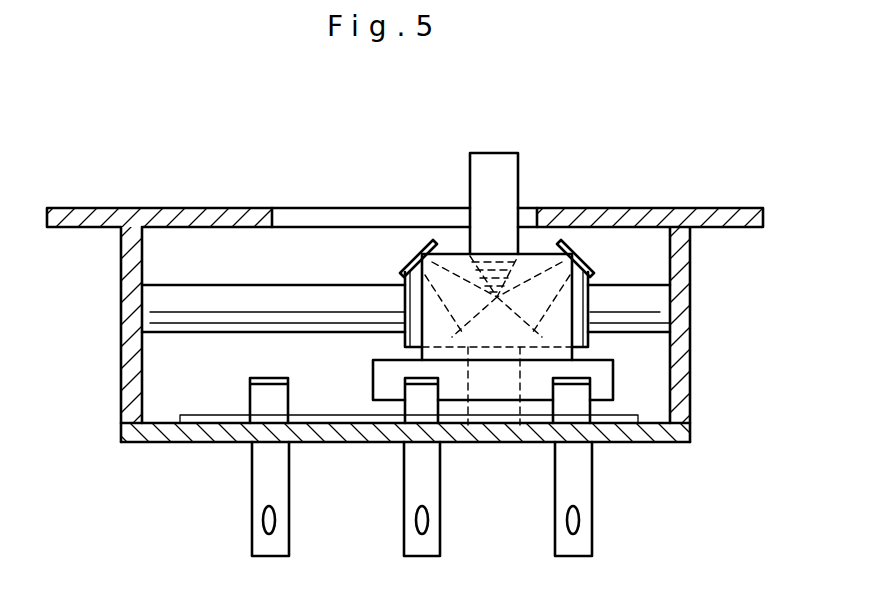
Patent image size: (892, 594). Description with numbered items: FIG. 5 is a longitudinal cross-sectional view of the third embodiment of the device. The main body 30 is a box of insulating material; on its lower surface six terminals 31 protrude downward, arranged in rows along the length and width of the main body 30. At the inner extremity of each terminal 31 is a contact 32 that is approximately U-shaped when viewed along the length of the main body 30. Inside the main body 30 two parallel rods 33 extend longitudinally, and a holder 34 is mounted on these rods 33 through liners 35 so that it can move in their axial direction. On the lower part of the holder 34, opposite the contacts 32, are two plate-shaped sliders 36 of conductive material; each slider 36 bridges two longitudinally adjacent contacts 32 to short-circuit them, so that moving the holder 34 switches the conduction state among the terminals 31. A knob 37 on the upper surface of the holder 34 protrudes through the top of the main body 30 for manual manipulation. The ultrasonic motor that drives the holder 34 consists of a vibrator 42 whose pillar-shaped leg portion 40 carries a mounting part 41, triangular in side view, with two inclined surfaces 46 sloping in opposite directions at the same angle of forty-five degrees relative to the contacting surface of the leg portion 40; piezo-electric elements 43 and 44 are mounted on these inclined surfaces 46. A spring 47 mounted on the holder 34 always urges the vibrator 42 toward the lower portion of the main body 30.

The main body of the device 30 is at (723, 208).
The terminals 31 is at (260, 544).
The contact 32 is at (268, 392).
The rods 33 is at (187, 323).
The holder 34 is at (447, 270).
The liners 35 is at (408, 303).
The sliders 36 is at (602, 383).
The knob 37 is at (495, 153).
The leg portion 40 is at (488, 390).
The mounting part 41 is at (592, 340).
The vibrator 42 is at (470, 370).
The piezo-electric element 43 is at (563, 243).
The piezo-electric element 44 is at (418, 245).
The inclined surfaces 46 is at (403, 258).
The spring 47 is at (497, 254).